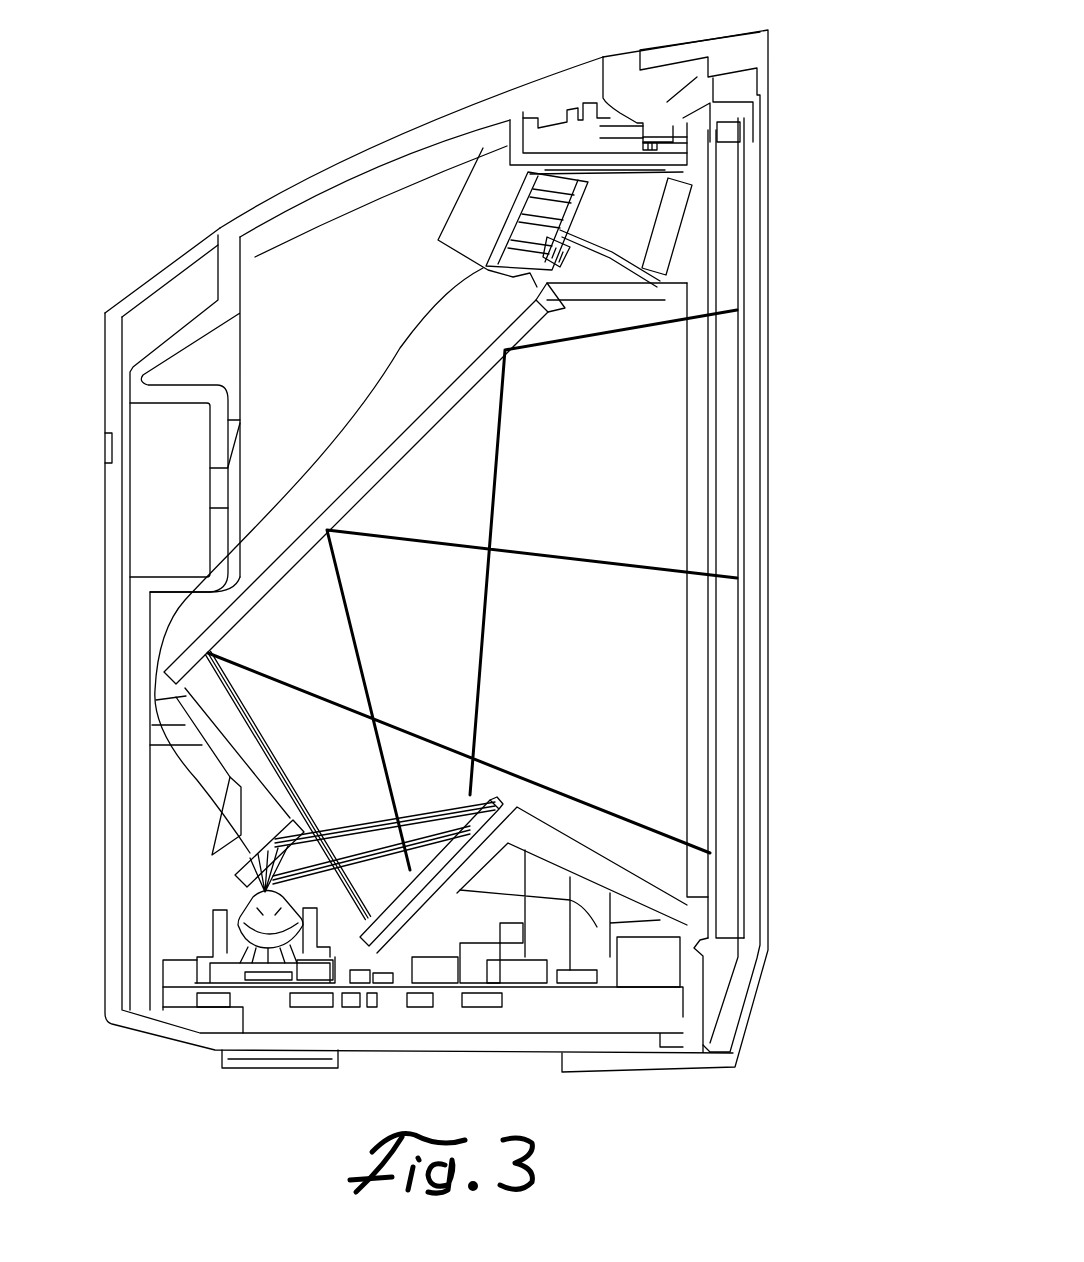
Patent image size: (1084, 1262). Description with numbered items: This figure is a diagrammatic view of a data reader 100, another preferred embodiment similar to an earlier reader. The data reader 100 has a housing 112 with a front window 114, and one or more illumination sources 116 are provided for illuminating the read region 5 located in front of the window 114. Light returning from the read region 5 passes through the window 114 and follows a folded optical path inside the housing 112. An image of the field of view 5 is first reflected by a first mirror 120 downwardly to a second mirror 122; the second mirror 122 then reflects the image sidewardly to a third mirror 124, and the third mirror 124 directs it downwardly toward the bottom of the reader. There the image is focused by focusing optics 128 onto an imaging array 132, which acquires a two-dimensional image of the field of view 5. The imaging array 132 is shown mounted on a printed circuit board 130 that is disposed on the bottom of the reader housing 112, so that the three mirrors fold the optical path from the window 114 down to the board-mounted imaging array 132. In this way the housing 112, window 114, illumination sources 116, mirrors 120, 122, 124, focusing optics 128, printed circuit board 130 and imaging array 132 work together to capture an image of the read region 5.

The data reader 100 is at (352, 103).
The housing 112 is at (290, 178).
The front window 114 is at (698, 368).
The illumination sources 116 is at (623, 220).
The first mirror 120 is at (217, 653).
The second mirror 122 is at (510, 780).
The third mirror 124 is at (283, 863).
The focusing optics 128 is at (233, 903).
The printed circuit board 130 is at (402, 988).
The imaging array 132 is at (205, 950).
The read region 5 is at (831, 603).